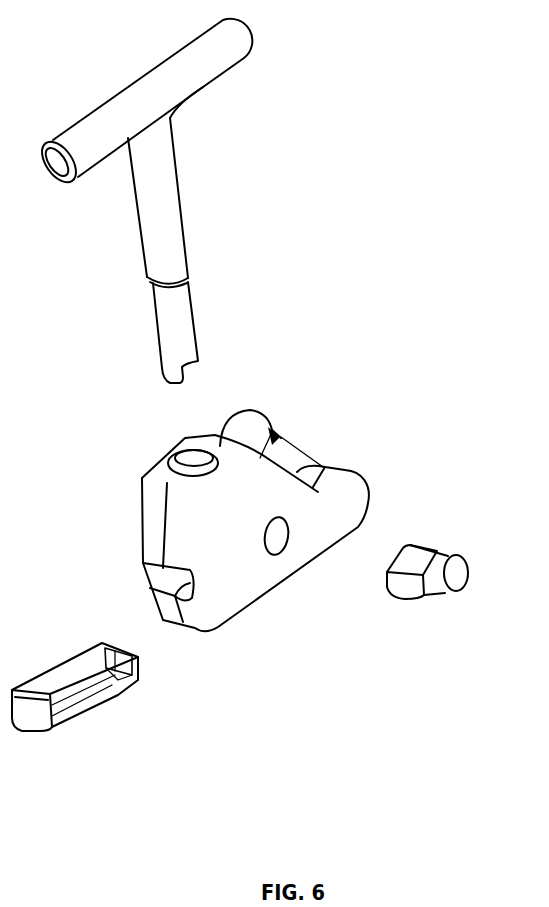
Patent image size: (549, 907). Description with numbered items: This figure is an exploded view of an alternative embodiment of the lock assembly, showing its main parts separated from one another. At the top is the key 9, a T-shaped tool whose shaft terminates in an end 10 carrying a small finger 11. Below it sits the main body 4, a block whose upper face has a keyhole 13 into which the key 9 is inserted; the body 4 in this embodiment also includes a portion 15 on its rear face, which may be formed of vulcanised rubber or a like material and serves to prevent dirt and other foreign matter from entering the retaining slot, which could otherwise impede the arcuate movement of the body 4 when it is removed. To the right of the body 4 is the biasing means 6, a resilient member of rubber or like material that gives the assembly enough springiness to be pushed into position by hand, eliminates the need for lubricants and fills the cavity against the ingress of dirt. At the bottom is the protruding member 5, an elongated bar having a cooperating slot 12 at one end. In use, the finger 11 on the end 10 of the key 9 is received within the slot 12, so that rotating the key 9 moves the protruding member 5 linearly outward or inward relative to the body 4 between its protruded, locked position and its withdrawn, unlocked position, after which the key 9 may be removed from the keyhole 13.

The key 9 is at (165, 180).
The end of the key 10 is at (172, 353).
The finger 11 is at (165, 381).
The keyhole 13 is at (183, 460).
The portion on the rear face of the body 15 is at (252, 428).
The main body 4 is at (250, 487).
The biasing means 6 is at (452, 577).
The protruding member 5 is at (83, 713).
The slot 12 is at (130, 692).